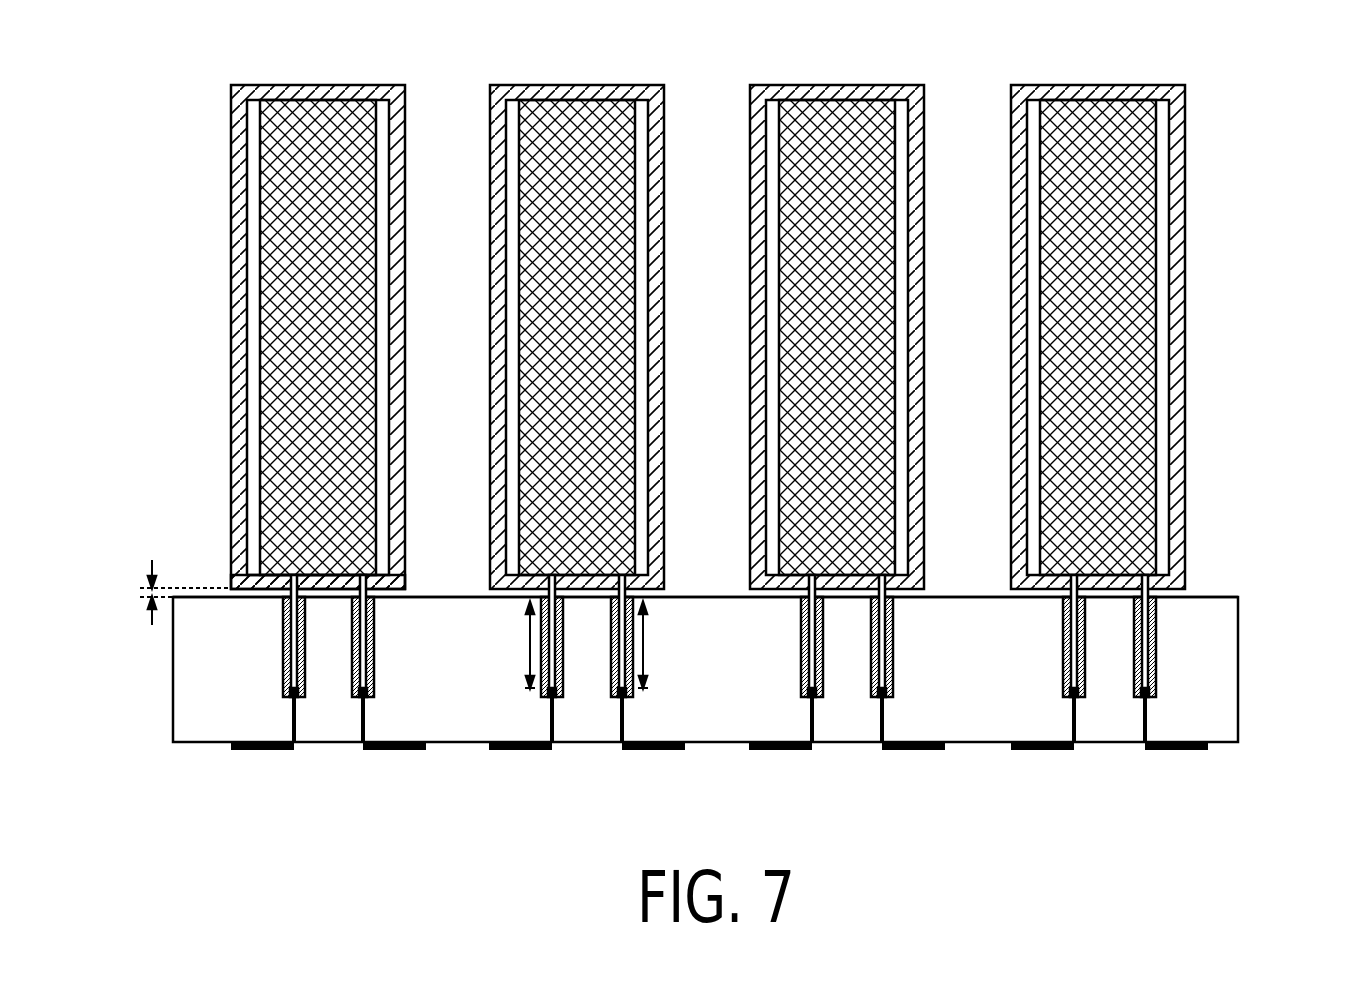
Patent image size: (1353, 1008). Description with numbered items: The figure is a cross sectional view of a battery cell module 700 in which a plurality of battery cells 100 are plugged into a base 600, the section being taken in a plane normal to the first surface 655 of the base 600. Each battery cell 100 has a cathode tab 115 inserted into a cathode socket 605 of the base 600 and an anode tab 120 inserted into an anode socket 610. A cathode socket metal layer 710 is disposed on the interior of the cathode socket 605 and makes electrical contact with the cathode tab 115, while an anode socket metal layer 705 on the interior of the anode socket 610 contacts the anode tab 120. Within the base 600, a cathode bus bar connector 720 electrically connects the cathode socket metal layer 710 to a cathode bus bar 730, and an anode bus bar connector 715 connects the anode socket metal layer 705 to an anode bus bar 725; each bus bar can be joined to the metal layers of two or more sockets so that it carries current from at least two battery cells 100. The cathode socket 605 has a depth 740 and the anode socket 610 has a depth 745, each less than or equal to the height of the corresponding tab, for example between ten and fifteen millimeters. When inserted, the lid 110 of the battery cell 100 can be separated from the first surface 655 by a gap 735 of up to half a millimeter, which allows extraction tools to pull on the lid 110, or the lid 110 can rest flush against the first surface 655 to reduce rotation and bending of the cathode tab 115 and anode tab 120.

The battery cell 100 is at (322, 68).
The battery cell module 700 is at (1262, 252).
The base 600 is at (1238, 648).
The first surface 655 is at (1207, 597).
The gap 735 is at (144, 560).
The lid 110 is at (232, 586).
The anode socket 610 is at (270, 636).
The cathode socket 605 is at (384, 636).
The anode tab 120 is at (291, 653).
The cathode tab 115 is at (365, 653).
The anode socket metal layer 705 is at (291, 700).
The cathode socket metal layer 710 is at (366, 700).
The anode bus bar connector 715 is at (295, 718).
The cathode bus bar connector 720 is at (362, 718).
The anode bus bar 725 is at (270, 750).
The cathode bus bar 730 is at (395, 750).
The depth of anode socket 745 is at (530, 640).
The depth of cathode socket 740 is at (647, 645).